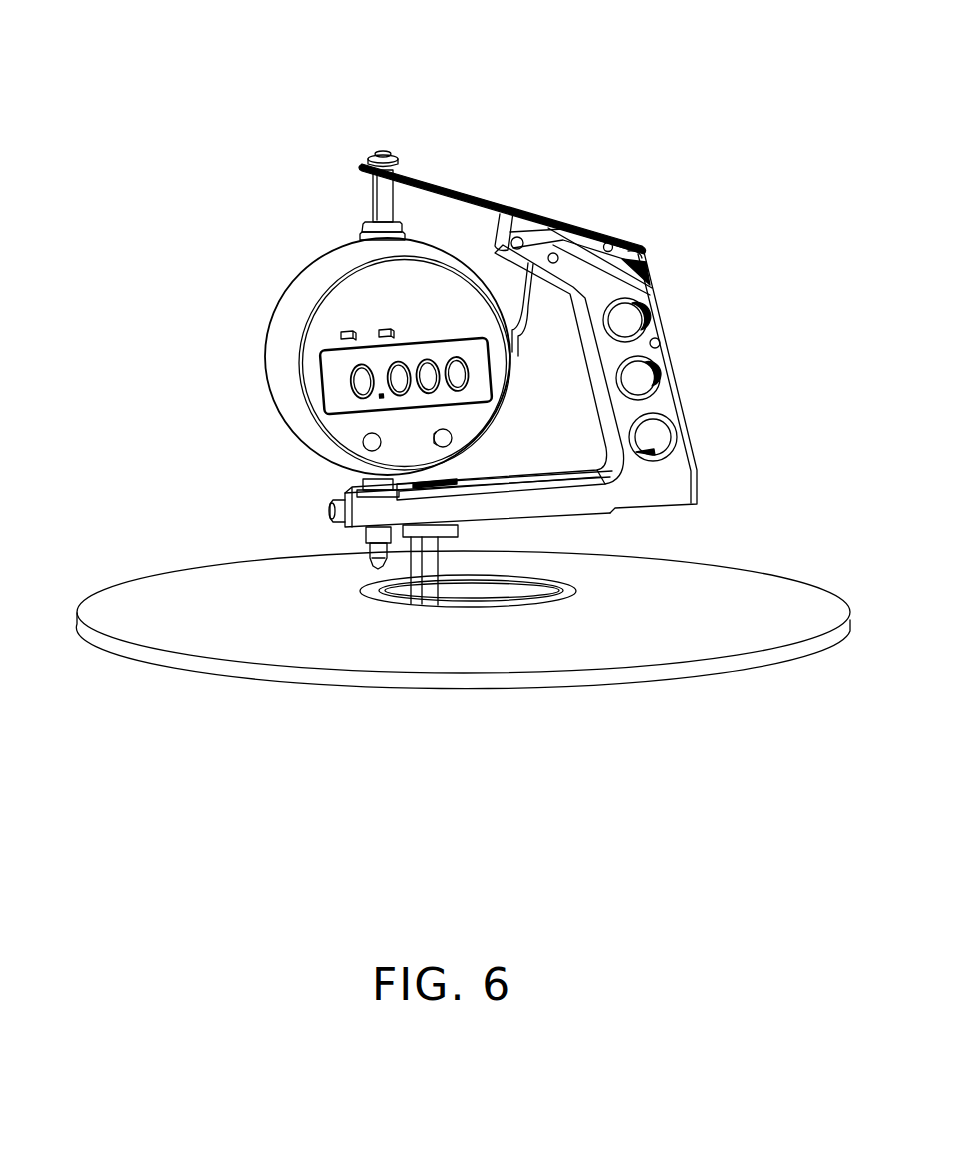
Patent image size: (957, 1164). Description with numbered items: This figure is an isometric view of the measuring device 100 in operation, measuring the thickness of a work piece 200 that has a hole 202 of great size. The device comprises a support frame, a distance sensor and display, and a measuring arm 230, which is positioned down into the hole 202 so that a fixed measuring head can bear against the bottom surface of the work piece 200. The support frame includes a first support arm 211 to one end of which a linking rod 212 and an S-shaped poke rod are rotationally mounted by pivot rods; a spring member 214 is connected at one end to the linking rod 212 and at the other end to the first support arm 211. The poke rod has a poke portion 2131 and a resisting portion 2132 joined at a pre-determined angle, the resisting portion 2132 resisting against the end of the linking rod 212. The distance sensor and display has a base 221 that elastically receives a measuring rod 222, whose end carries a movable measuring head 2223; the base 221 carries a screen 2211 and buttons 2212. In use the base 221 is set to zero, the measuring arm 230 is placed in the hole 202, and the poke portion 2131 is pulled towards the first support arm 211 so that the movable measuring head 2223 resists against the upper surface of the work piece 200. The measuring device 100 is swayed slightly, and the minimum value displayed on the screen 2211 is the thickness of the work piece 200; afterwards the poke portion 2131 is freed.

The measuring device 100 is at (475, 39).
The work piece 200 is at (183, 590).
The hole 202 is at (487, 600).
The first support arm 211 is at (670, 403).
The linking rod 212 is at (437, 183).
The poke portion 2131 is at (540, 293).
The resisting portion 2132 is at (643, 263).
The spring member 214 is at (645, 279).
The base 221 is at (345, 367).
The screen 2211 is at (330, 380).
The button 2212 is at (362, 443).
The measuring rod 222 is at (378, 202).
The movable measuring head 2223 is at (377, 563).
The measuring arm 230 is at (440, 562).